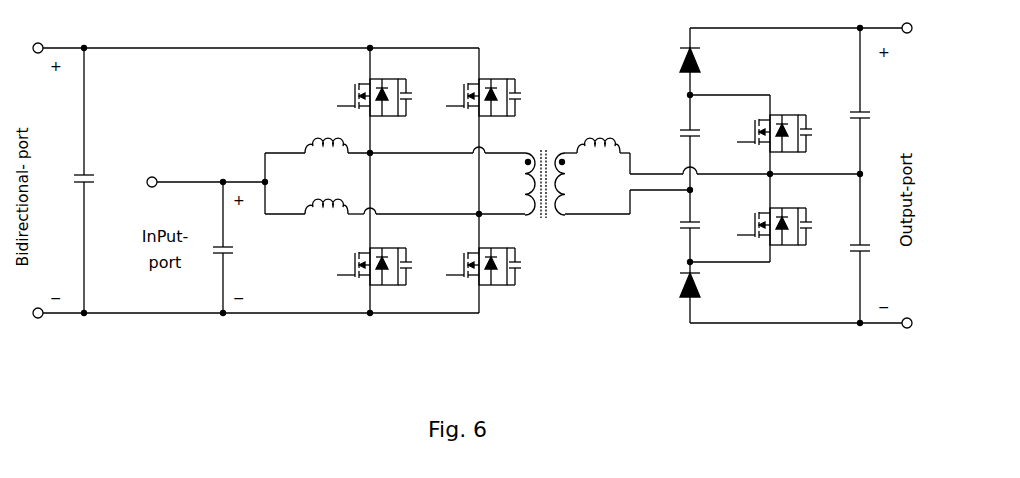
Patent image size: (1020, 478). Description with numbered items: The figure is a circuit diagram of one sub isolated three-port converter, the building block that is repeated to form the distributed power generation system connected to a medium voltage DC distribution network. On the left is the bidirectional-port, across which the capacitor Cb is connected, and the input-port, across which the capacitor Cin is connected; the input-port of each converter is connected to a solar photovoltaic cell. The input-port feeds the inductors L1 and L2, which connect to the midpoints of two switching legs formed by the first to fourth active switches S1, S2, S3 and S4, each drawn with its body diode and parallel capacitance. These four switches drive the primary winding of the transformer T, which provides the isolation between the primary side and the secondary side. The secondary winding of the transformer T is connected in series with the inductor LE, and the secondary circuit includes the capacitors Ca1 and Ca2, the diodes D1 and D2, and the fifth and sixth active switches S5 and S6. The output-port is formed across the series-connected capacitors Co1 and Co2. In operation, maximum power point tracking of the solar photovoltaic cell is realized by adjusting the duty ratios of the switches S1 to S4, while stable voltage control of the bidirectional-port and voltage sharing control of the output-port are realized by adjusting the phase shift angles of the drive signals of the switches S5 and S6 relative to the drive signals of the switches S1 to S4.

The capacitor Cb is at (100, 180).
The capacitor Cin is at (240, 247).
The inductor L1 is at (369, 132).
The inductor L2 is at (372, 192).
The active switch S1 is at (366, 95).
The active switch S2 is at (366, 264).
The active switch S3 is at (474, 95).
The active switch S4 is at (474, 264).
The transformer T is at (545, 168).
The inductor LE is at (597, 129).
The capacitor Ca1 is at (668, 133).
The capacitor Ca2 is at (668, 226).
The diode D1 is at (671, 61).
The diode D2 is at (671, 287).
The active switch S5 is at (765, 130).
The active switch S6 is at (765, 224).
The capacitor Co1 is at (841, 101).
The capacitor Co2 is at (841, 248).